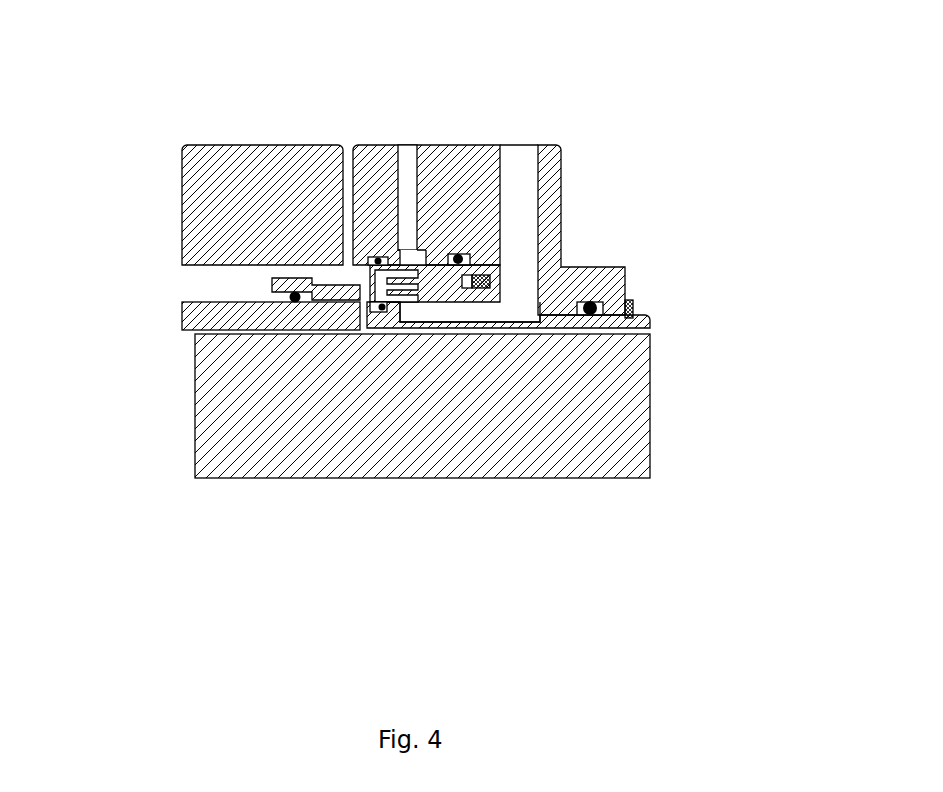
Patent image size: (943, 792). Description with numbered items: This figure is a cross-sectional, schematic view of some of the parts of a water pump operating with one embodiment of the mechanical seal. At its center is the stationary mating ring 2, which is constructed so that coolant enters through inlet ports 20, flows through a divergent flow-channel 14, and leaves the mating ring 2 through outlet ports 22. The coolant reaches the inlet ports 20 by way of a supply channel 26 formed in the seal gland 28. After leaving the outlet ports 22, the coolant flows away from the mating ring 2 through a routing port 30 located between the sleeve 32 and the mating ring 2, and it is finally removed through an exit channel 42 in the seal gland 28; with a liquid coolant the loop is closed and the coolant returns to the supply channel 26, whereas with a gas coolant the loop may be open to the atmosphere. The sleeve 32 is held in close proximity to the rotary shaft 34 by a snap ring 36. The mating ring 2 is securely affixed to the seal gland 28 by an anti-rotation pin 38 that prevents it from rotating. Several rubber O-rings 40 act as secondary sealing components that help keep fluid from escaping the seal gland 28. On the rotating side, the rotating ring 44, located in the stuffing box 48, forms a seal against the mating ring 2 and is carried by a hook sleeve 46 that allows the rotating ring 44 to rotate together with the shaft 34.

The mating ring 2 is at (368, 272).
The divergent flow-channel 14 is at (382, 307).
The inlet ports 20 is at (385, 264).
The outlet ports 22 is at (410, 302).
The supply channel 26 is at (412, 152).
The seal gland 28 is at (557, 152).
The routing port 30 is at (428, 313).
The sleeve 32 is at (655, 323).
The rotary shaft 34 is at (605, 478).
The snap ring 36 is at (633, 302).
The anti-rotation pin 38 is at (483, 287).
The rubber O-rings 40 is at (285, 305).
The exit channel 42 is at (525, 190).
The rotating ring 44 is at (317, 292).
The hook sleeve 46 is at (182, 321).
The stuffing box 48 is at (271, 145).